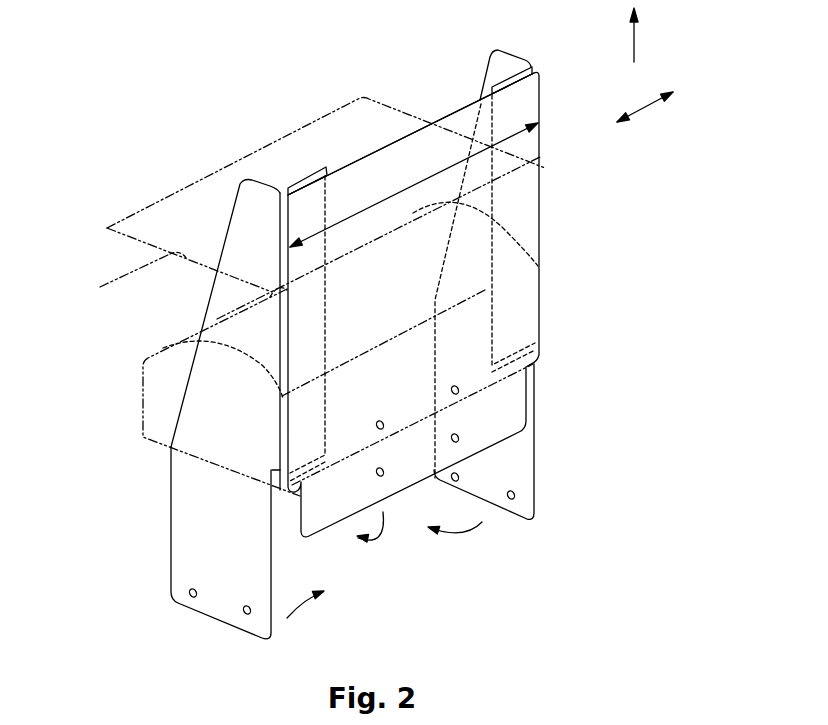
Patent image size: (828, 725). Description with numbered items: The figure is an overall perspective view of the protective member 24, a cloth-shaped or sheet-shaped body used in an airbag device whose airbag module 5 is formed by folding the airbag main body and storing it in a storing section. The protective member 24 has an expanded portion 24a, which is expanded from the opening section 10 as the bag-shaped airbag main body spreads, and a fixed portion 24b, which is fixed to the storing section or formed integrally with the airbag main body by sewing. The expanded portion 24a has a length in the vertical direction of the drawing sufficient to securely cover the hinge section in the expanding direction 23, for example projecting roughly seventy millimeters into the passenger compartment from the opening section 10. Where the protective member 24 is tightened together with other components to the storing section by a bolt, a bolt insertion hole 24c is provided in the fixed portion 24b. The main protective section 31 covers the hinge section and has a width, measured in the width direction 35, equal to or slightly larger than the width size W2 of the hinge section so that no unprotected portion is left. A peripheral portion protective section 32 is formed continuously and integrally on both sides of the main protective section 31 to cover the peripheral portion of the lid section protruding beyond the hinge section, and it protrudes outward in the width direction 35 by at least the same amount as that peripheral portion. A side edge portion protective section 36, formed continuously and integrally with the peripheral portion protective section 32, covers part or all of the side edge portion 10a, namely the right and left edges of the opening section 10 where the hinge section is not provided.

The airbag module 5 is at (143, 397).
The opening section 10 is at (173, 214).
The side edge portion 10a is at (122, 273).
The expanding direction 23 is at (634, 45).
The protective member 24 is at (444, 1).
The expanded portion 24a is at (568, 134).
The fixed portion 24b is at (541, 397).
The bolt insertion hole 24c is at (458, 438).
The main protective section 31 is at (383, 147).
The peripheral portion protective section 32 is at (302, 173).
The width direction 35 is at (647, 107).
The side edge portion protective section 36 is at (262, 182).
The width size of the hinge section W2 is at (457, 195).